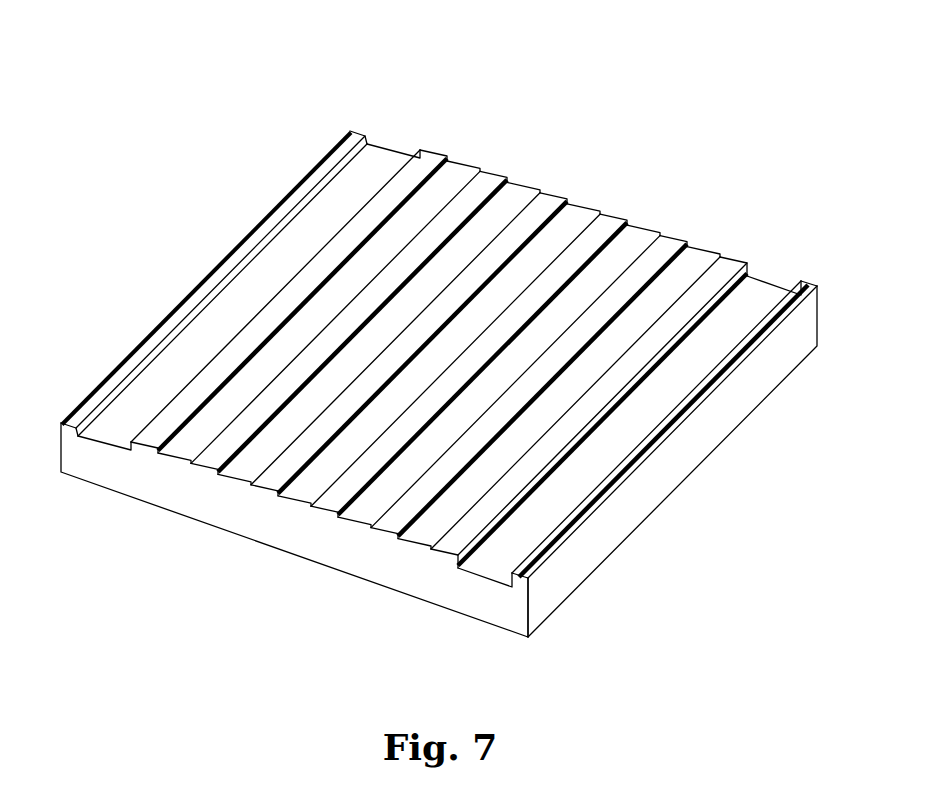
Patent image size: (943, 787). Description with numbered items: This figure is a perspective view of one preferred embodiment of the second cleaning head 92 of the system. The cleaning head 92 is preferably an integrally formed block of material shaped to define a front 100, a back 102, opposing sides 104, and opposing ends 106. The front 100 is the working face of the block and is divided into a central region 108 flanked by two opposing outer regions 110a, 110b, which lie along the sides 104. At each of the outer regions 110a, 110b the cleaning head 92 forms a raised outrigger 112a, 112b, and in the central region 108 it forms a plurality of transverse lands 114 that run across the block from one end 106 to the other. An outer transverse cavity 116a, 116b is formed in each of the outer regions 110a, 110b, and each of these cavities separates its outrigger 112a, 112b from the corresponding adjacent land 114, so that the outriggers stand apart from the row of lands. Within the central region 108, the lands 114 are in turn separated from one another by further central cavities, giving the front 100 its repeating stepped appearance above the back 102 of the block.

The cleaning head 92 is at (500, 51).
The front 100 is at (508, 208).
The back 102 is at (430, 614).
The sides 104 is at (236, 240).
The ends 106 is at (707, 243).
The central region 108 is at (245, 490).
The outer region 110a is at (74, 456).
The outer region 110b is at (511, 598).
The outrigger 112a is at (181, 317).
The outrigger 112b is at (569, 572).
The transverse lands 114 is at (489, 172).
The outer transverse cavity 116a is at (146, 404).
The outer transverse cavity 116b is at (564, 486).